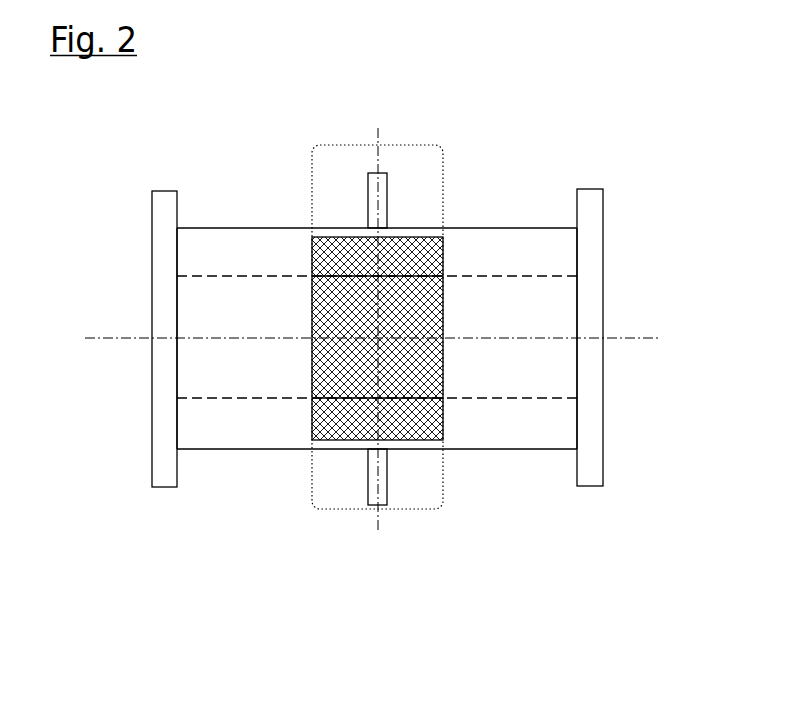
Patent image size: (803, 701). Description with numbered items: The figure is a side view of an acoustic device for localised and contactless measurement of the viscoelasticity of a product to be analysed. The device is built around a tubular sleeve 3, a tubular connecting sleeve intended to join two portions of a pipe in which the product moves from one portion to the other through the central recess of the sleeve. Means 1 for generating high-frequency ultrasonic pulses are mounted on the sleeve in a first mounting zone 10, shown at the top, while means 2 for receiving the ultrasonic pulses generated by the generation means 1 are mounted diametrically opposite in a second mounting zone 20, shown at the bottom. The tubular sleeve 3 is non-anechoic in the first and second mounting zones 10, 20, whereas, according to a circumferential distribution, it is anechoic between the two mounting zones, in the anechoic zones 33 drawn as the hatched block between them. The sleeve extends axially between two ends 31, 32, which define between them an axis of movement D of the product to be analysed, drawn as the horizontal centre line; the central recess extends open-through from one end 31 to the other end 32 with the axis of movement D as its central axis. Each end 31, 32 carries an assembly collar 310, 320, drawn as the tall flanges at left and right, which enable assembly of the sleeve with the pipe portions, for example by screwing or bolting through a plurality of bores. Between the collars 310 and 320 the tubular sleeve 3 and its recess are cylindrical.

The generation means 1 is at (363, 200).
The reception means 2 is at (396, 490).
The tubular sleeve 3 is at (521, 220).
The first mounting zone 10 is at (382, 219).
The second mounting zone 20 is at (384, 444).
The first end 31 is at (142, 292).
The second end 32 is at (612, 287).
The anechoic zone 33 is at (446, 280).
The assembly collar 310 is at (160, 435).
The assembly collar 320 is at (604, 470).
The axis of movement D is at (372, 330).